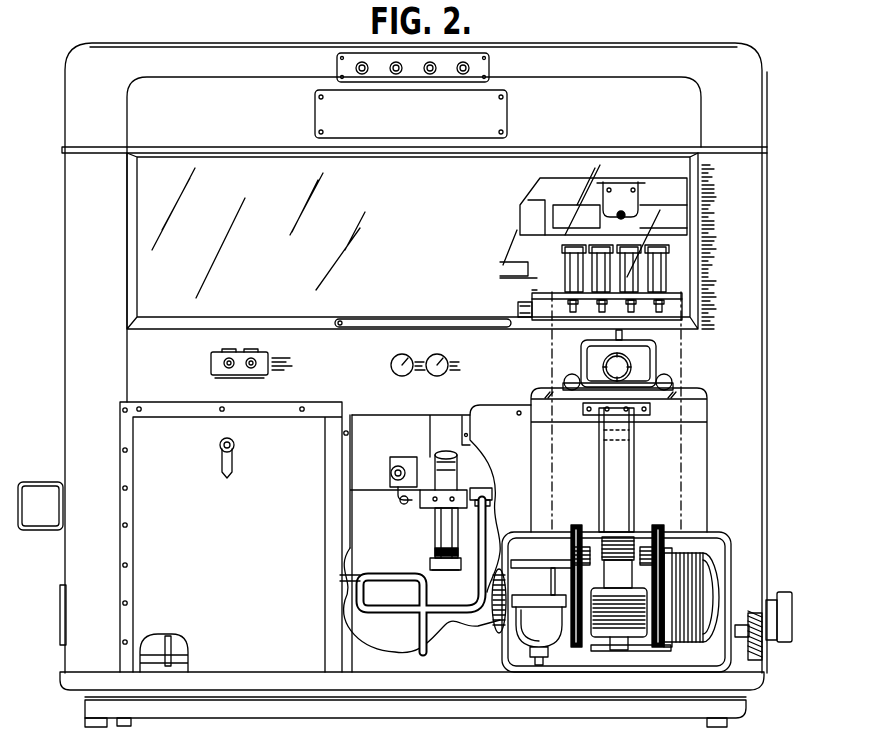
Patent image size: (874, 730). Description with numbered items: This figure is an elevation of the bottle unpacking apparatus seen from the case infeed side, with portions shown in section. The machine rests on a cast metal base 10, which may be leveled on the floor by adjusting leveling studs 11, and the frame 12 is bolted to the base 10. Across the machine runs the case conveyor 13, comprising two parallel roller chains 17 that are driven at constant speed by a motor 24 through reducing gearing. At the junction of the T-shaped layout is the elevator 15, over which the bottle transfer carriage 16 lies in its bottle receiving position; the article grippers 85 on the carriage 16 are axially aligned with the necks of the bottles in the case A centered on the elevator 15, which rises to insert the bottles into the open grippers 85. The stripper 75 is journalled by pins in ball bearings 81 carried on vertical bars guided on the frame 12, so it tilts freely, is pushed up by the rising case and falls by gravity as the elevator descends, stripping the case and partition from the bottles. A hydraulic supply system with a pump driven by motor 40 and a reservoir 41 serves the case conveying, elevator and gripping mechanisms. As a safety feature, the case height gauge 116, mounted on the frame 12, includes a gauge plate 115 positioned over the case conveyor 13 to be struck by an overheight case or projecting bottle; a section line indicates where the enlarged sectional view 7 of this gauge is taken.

The base 10 is at (90, 707).
The leveling studs 11 is at (740, 722).
The frame 12 is at (734, 657).
The case conveyor 13 is at (690, 522).
The elevator 15 is at (645, 463).
The bottle transfer carriage 16 is at (717, 230).
The roller chains 17 is at (577, 528).
The motor 24 is at (631, 640).
The motor 40 is at (701, 588).
The reservoir 41 is at (451, 593).
The stripper 75 is at (679, 295).
The ball bearings 81 is at (517, 310).
The article grippers 85 is at (667, 307).
The case height gauge plate 115 is at (697, 422).
The case height gauge 116 is at (674, 373).
The section line 7 is at (672, 367).
The case A is at (684, 362).